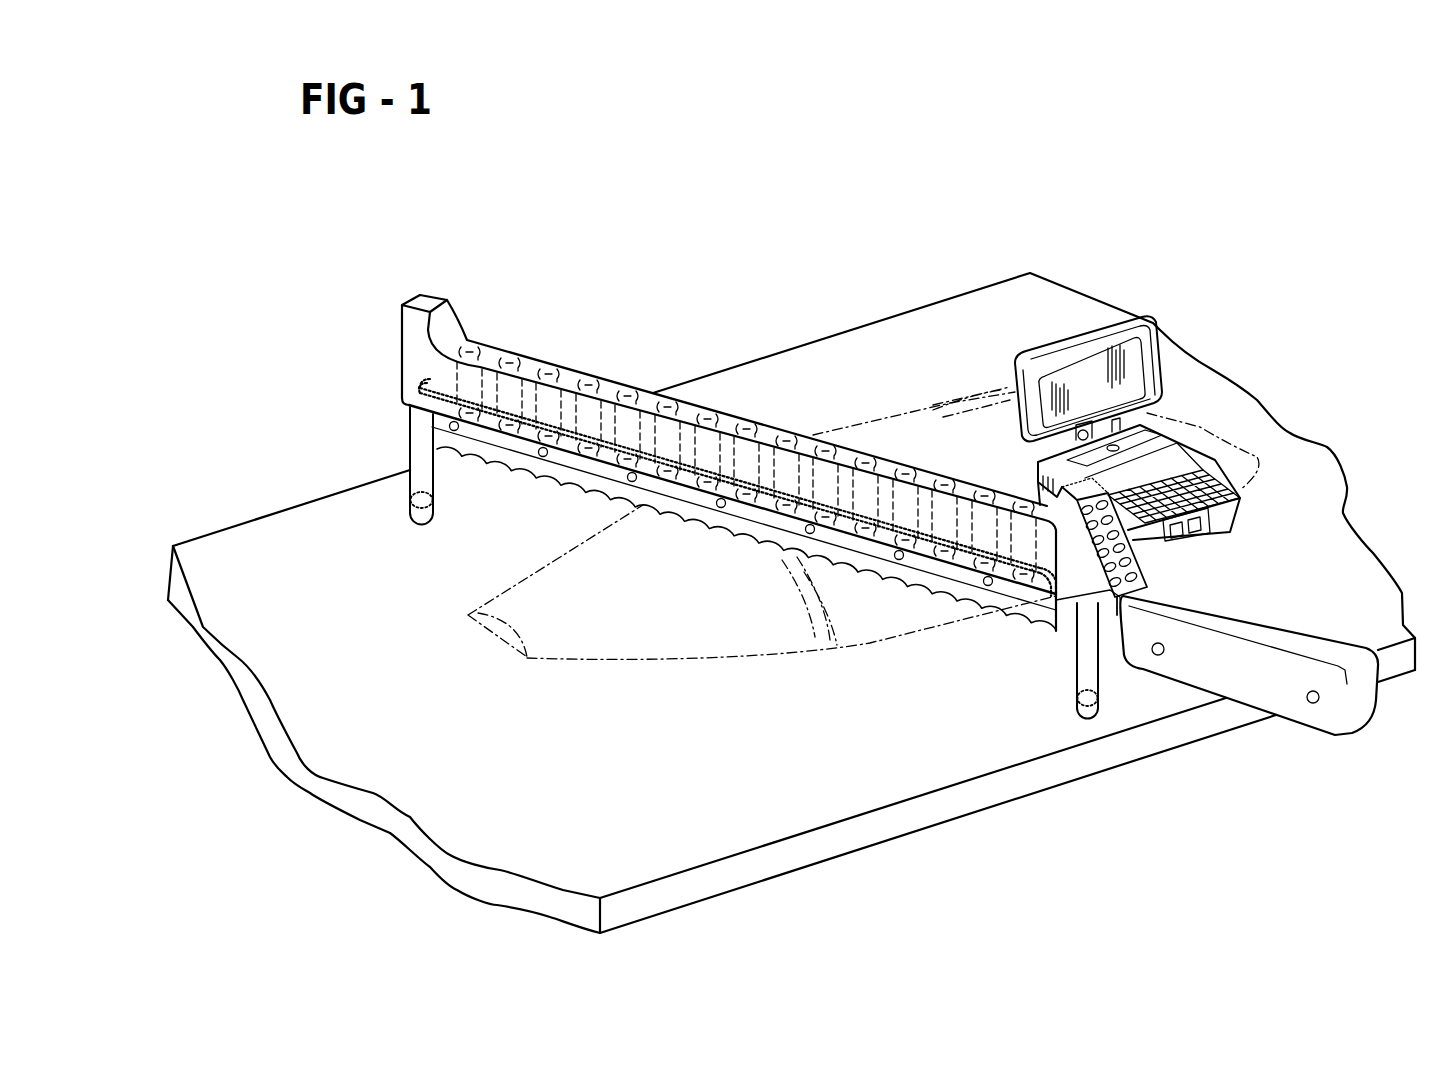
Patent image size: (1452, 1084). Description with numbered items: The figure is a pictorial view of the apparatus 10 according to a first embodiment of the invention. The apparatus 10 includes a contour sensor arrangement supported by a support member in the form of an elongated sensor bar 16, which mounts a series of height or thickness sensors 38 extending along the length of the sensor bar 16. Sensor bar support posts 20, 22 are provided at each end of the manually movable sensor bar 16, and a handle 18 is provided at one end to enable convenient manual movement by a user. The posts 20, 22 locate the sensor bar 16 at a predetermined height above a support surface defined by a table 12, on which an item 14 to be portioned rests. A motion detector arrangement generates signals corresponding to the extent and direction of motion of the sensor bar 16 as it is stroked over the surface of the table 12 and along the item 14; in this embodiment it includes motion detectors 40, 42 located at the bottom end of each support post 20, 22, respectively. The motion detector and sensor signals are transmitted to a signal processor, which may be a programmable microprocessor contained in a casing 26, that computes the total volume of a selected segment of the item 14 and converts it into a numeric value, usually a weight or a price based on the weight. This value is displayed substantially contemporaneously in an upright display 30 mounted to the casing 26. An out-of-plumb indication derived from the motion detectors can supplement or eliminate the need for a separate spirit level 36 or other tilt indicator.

The apparatus 10 is at (660, 310).
The table 12 is at (233, 556).
The item to be portioned 14 is at (903, 427).
The elongated sensor bar 16 is at (766, 440).
The handle 18 is at (1288, 713).
The sensor bar support post 20 is at (1124, 694).
The sensor bar support post 22 is at (349, 438).
The casing 26 is at (1172, 433).
The upright display 30 is at (1140, 312).
The spirit level 36 is at (1148, 440).
The height or thickness sensors 38 is at (507, 347).
The motion detector 40 is at (1093, 693).
The motion detector 42 is at (412, 500).